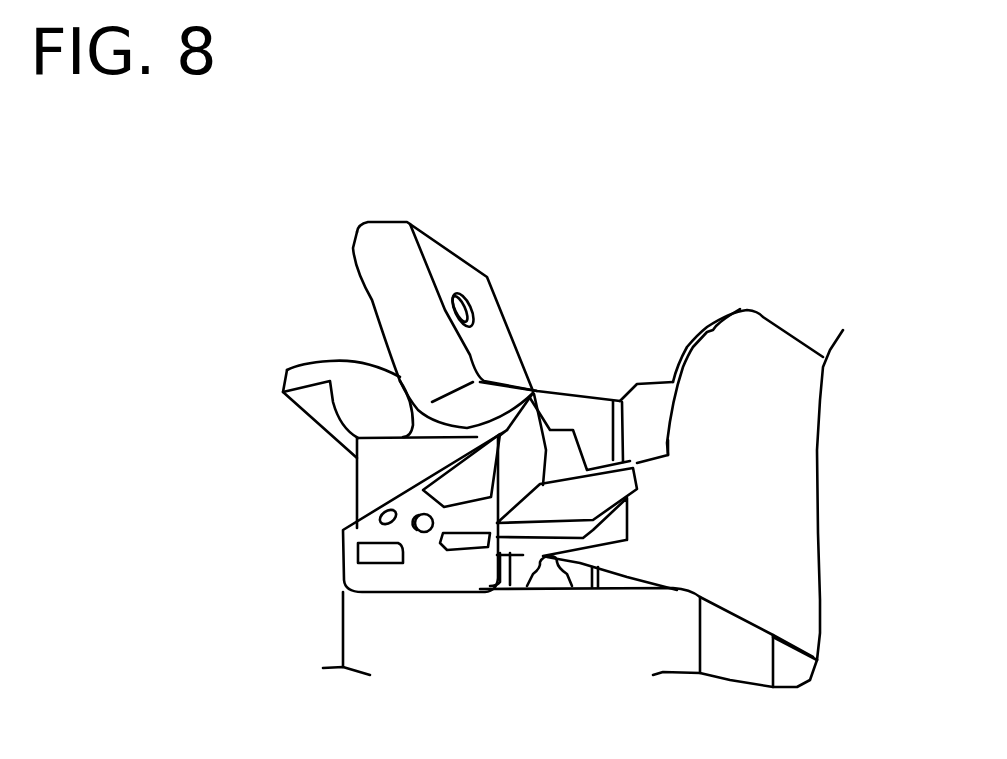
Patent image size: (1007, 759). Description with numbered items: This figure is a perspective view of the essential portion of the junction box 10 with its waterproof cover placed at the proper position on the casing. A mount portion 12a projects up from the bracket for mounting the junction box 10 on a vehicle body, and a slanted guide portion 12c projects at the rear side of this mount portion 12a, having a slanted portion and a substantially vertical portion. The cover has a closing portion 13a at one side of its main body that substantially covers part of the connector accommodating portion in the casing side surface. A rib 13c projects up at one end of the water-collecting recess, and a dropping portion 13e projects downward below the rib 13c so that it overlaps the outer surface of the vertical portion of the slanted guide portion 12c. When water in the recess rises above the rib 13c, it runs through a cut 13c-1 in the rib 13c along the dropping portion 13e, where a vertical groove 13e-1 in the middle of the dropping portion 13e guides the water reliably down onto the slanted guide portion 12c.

The junction box 10 is at (330, 630).
The mount portion 12a is at (380, 275).
The slanted guide portion 12c is at (540, 512).
The closing portion 13a is at (307, 362).
The rib 13c is at (665, 368).
The cut 13c-1 is at (634, 383).
The dropping portion 13e is at (577, 391).
The groove 13e-1 is at (620, 398).